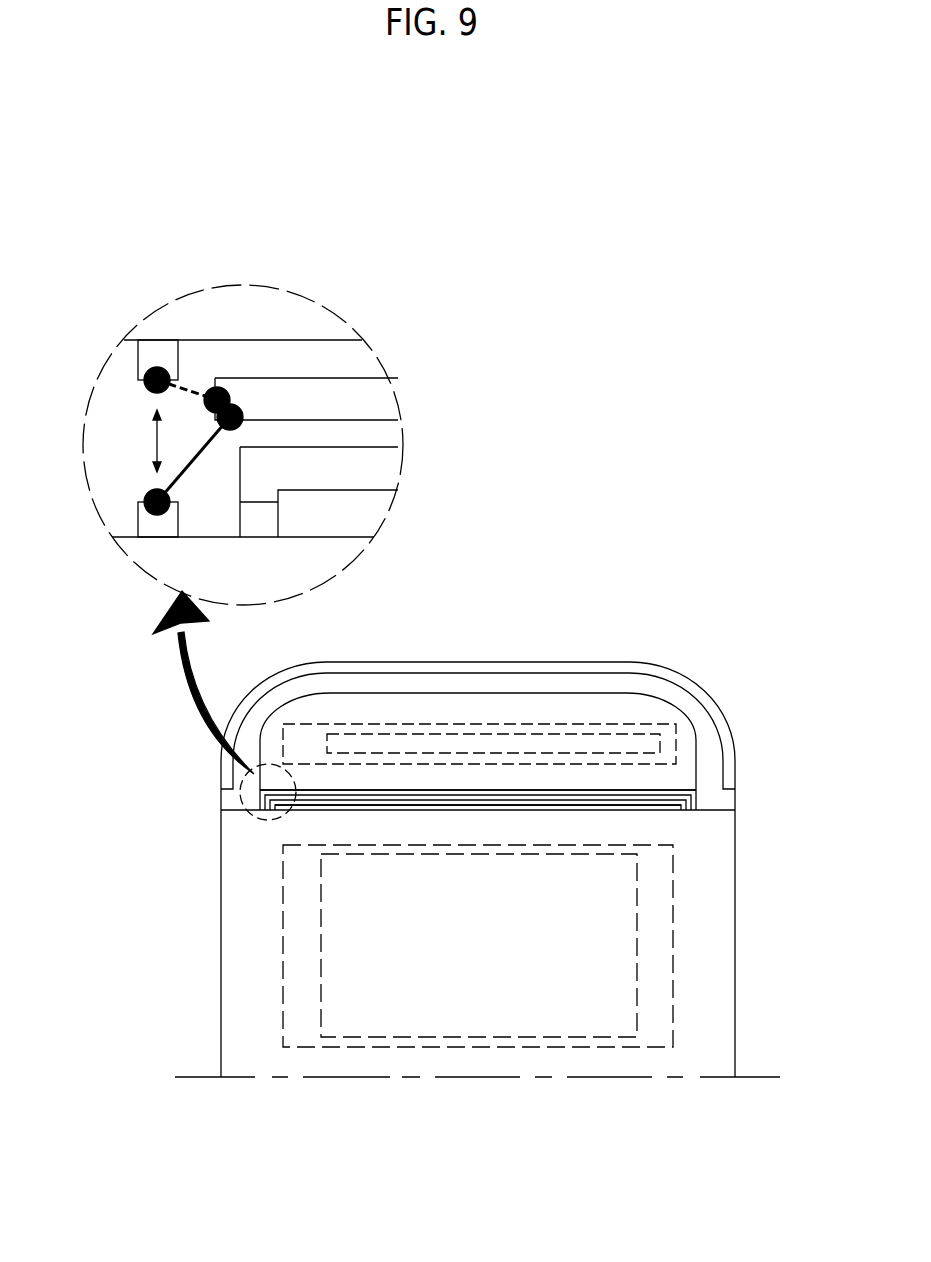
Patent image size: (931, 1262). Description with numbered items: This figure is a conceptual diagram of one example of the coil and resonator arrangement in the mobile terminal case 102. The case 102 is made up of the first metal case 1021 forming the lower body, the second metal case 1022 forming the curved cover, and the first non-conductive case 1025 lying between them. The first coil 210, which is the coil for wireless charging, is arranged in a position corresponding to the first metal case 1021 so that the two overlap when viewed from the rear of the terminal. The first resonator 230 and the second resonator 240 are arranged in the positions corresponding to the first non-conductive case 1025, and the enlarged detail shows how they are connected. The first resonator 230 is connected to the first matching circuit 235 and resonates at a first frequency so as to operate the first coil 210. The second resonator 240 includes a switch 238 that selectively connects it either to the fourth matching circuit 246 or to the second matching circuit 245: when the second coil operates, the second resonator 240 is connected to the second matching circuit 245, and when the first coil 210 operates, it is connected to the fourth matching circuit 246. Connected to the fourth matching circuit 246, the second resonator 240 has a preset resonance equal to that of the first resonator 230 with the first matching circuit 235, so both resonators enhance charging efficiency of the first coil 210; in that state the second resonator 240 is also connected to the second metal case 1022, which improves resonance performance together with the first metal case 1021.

The case 102 is at (485, 690).
The first metal case 1021 is at (808, 747).
The second metal case 1022 is at (687, 752).
The first non-conductive case 1025 is at (698, 795).
The first coil 210 is at (673, 943).
The first resonator 230 is at (597, 805).
The first matching circuit 235 is at (270, 518).
The switch 238 is at (170, 490).
The second resonator 240 is at (532, 793).
The second matching circuit 245 is at (145, 520).
The fourth matching circuit 246 is at (145, 355).